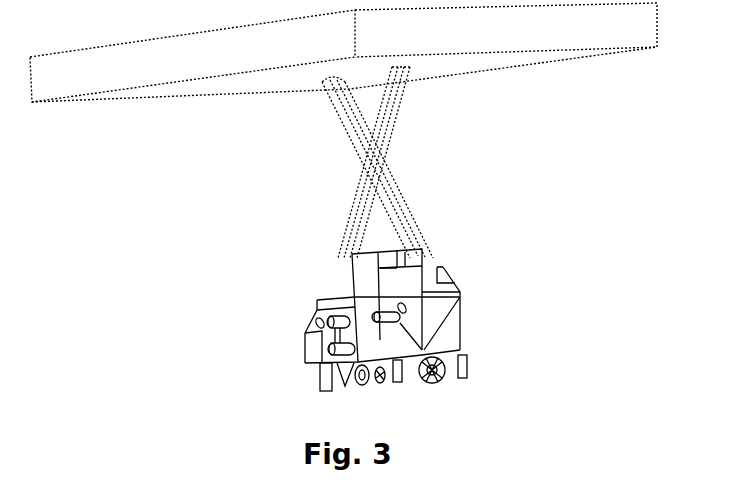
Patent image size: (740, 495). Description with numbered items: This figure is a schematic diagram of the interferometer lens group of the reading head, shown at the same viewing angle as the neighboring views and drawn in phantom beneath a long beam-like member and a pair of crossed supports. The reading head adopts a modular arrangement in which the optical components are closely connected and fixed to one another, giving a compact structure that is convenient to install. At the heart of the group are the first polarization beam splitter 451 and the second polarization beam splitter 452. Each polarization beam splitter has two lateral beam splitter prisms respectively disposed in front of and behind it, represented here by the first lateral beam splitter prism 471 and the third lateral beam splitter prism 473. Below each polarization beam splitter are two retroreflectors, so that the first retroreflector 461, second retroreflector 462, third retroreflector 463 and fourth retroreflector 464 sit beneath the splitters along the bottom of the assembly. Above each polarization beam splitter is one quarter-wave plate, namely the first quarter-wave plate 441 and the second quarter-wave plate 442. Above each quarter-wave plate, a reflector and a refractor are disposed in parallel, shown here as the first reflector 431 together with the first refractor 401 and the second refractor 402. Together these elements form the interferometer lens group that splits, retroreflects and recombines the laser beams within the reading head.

The first refractor 401 is at (445, 279).
The second refractor 402 is at (333, 292).
The first reflector 431 is at (397, 283).
The first quarter-wave plate 441 is at (457, 294).
The second quarter-wave plate 442 is at (317, 299).
The first polarization beam splitter 451 is at (435, 320).
The second polarization beam splitter 452 is at (307, 325).
The first retroreflector 461 is at (453, 385).
The second retroreflector 462 is at (449, 362).
The third retroreflector 463 is at (413, 428).
The fourth retroreflector 464 is at (395, 387).
The first lateral beam splitter prism 471 is at (300, 369).
The third lateral beam splitter prism 473 is at (305, 348).